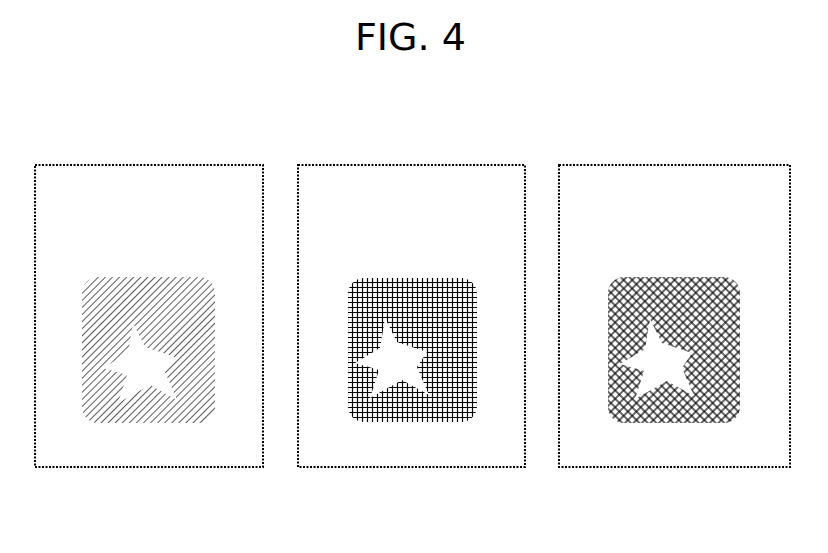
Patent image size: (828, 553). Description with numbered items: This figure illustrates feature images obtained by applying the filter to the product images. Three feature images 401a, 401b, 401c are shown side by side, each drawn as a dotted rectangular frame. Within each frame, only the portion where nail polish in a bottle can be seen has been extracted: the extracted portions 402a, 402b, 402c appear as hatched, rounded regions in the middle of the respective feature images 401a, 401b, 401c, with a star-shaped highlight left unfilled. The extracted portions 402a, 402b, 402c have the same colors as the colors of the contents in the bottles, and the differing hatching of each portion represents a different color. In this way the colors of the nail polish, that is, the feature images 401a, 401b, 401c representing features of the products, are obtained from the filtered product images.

The feature image 401a is at (135, 165).
The feature image 401b is at (400, 165).
The feature image 401c is at (665, 165).
The extracted portion 402a is at (176, 421).
The extracted portion 402b is at (436, 420).
The extracted portion 402c is at (698, 421).